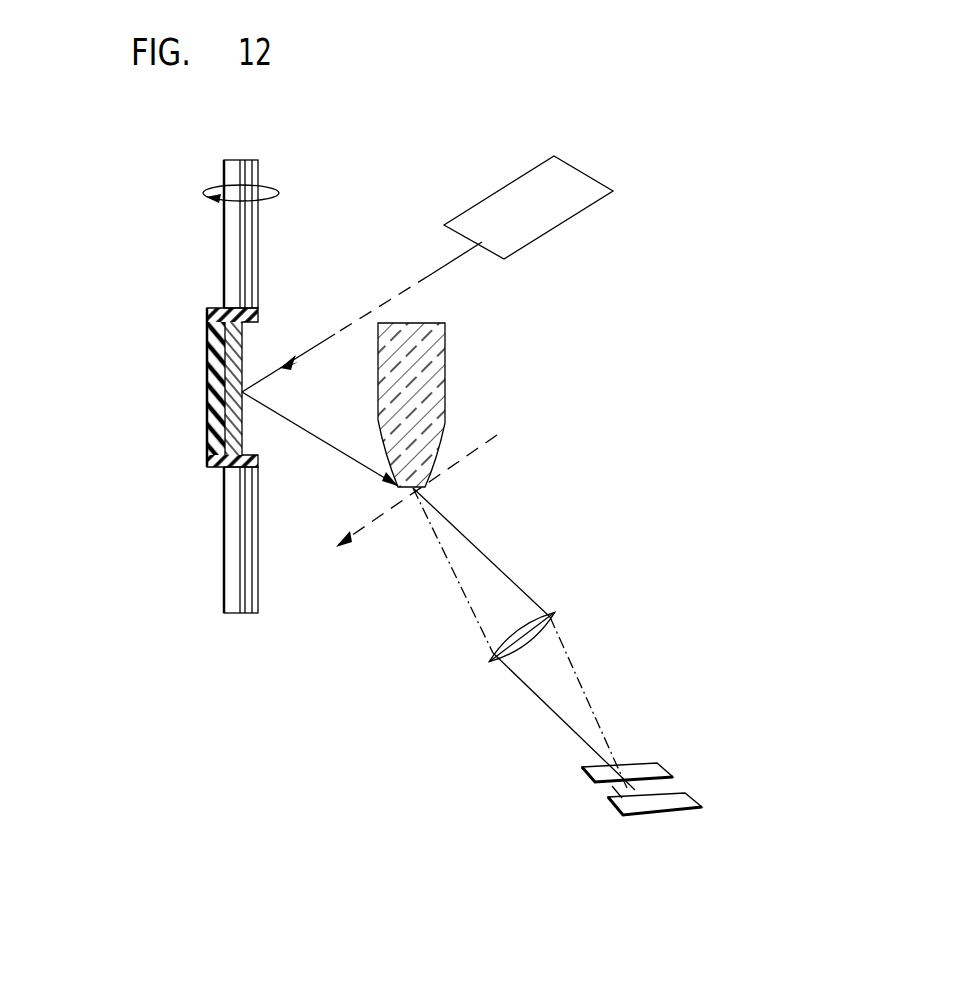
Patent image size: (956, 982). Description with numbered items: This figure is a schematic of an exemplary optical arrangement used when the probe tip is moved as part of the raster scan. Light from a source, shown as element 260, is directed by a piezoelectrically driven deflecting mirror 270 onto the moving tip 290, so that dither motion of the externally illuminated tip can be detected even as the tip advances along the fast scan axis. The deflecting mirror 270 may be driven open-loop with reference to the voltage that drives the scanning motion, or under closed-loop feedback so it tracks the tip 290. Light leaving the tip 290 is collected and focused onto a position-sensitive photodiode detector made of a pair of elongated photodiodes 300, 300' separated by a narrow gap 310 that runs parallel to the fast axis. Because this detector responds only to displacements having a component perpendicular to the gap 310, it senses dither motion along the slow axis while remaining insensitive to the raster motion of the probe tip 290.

The mirror 260 is at (556, 170).
The deflecting mirror 270 is at (243, 357).
The tip 290 is at (445, 362).
The photodiode 300 is at (659, 750).
The photodiode 300' is at (687, 782).
The gap 310 is at (603, 789).